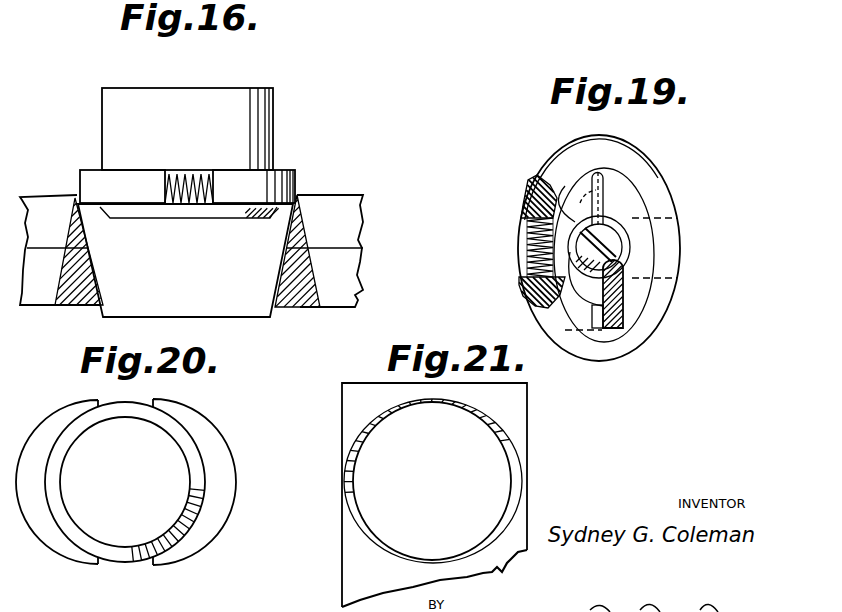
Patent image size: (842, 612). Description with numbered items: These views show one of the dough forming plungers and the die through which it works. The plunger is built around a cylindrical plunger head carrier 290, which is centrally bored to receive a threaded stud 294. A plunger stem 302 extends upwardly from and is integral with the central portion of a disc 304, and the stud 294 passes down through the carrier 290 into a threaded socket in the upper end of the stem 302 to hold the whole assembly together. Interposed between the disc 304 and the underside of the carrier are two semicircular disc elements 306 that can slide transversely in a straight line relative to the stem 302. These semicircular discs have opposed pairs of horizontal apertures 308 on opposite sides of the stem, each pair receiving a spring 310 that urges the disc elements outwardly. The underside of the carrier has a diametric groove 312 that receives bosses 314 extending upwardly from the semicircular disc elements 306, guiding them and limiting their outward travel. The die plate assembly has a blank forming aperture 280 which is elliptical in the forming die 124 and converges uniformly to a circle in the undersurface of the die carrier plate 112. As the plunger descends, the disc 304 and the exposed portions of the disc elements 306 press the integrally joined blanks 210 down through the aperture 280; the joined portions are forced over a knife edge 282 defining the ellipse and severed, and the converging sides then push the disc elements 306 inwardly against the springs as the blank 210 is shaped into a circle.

In FIG. 16, the die carrier plate 112 is at (307, 285).
In FIG. 16, the forming die 124 is at (307, 233).
In FIG. 21, the forming die 124 is at (520, 420).
In FIG. 16, the integrally joined blanks 210 is at (205, 277).
In FIG. 21, the blank forming aperture 280 is at (388, 485).
In FIG. 21, the knife edge 282 is at (517, 454).
In FIG. 16, the plunger head carrier 290 is at (268, 152).
In FIG. 19, the plunger head carrier 290 is at (613, 330).
In FIG. 19, the threaded stud 294 is at (608, 245).
In FIG. 19, the plunger stem 302 is at (587, 280).
In FIG. 16, the disc 304 is at (158, 212).
In FIG. 19, the disc 304 is at (525, 247).
In FIG. 20, the disc 304 is at (100, 530).
In FIG. 16, the semicircular disc elements 306 is at (88, 183).
In FIG. 19, the semicircular disc elements 306 is at (653, 175).
In FIG. 20, the semicircular disc elements 306 is at (218, 441).
In FIG. 19, the horizontal apertures 308 is at (525, 202).
In FIG. 16, the spring 310 is at (189, 175).
In FIG. 19, the spring 310 is at (530, 260).
In FIG. 19, the diametric groove 312 is at (613, 207).
In FIG. 19, the bosses 314 is at (598, 175).